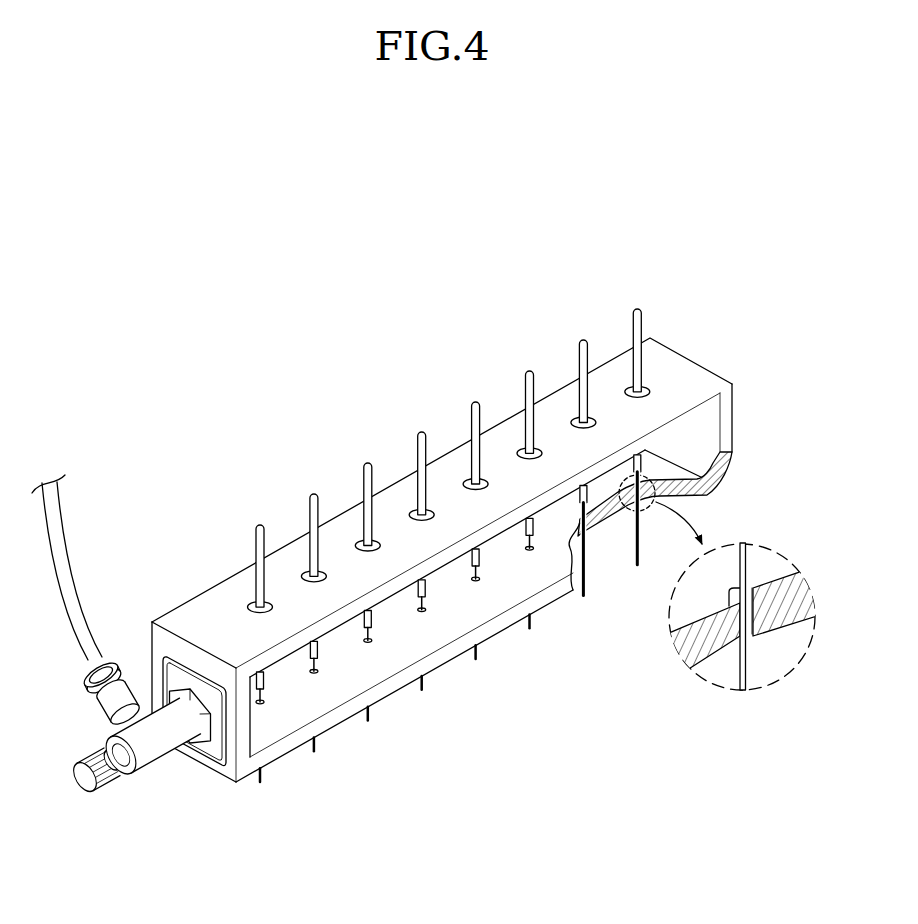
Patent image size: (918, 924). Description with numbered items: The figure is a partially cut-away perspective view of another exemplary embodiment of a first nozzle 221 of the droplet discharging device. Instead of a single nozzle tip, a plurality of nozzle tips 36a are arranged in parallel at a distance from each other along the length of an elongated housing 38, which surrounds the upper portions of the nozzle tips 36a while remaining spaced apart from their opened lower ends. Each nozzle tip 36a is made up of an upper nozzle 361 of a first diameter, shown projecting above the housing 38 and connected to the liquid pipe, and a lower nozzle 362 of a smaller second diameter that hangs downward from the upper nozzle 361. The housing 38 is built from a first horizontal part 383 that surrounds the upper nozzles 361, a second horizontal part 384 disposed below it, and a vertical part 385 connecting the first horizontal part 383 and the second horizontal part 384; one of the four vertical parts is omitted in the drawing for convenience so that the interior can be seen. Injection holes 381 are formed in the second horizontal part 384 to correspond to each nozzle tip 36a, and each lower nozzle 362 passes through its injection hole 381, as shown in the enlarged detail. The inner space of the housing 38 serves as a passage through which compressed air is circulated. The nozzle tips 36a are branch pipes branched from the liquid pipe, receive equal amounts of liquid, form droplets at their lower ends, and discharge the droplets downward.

The first nozzle 221 is at (353, 291).
The housing 38 is at (741, 399).
The injection hole 381 is at (748, 590).
The first horizontal part 383 is at (673, 370).
The second horizontal part 384 is at (488, 607).
The vertical part 385 is at (697, 435).
The nozzle tip 36a is at (414, 447).
The upper nozzle 361 is at (585, 355).
The lower nozzle 362 is at (369, 723).